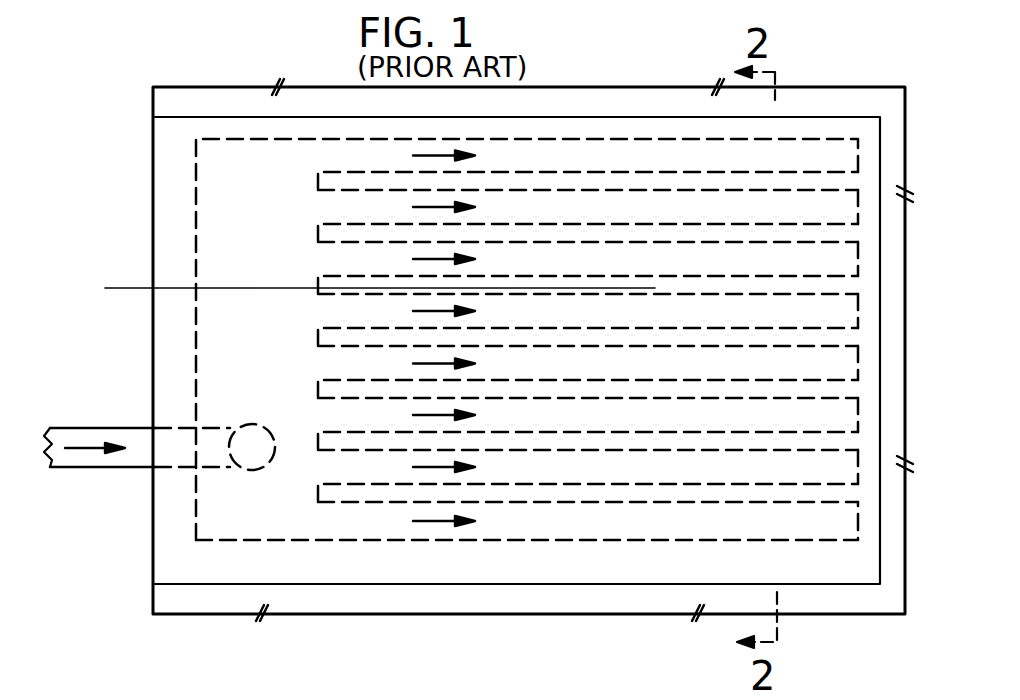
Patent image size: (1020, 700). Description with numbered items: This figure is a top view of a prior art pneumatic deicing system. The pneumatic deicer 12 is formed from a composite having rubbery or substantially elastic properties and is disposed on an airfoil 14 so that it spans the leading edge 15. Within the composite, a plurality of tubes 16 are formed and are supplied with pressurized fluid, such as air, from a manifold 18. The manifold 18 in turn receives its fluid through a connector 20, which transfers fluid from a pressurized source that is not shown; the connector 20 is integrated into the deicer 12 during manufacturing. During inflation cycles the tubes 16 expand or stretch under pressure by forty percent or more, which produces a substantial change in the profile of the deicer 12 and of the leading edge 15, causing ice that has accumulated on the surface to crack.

The pneumatic deicer 12 is at (155, 194).
The airfoil 14 is at (235, 100).
The leading edge 15 is at (127, 288).
The tubes 16 is at (665, 250).
The manifold 18 is at (235, 267).
The connector 20 is at (245, 470).